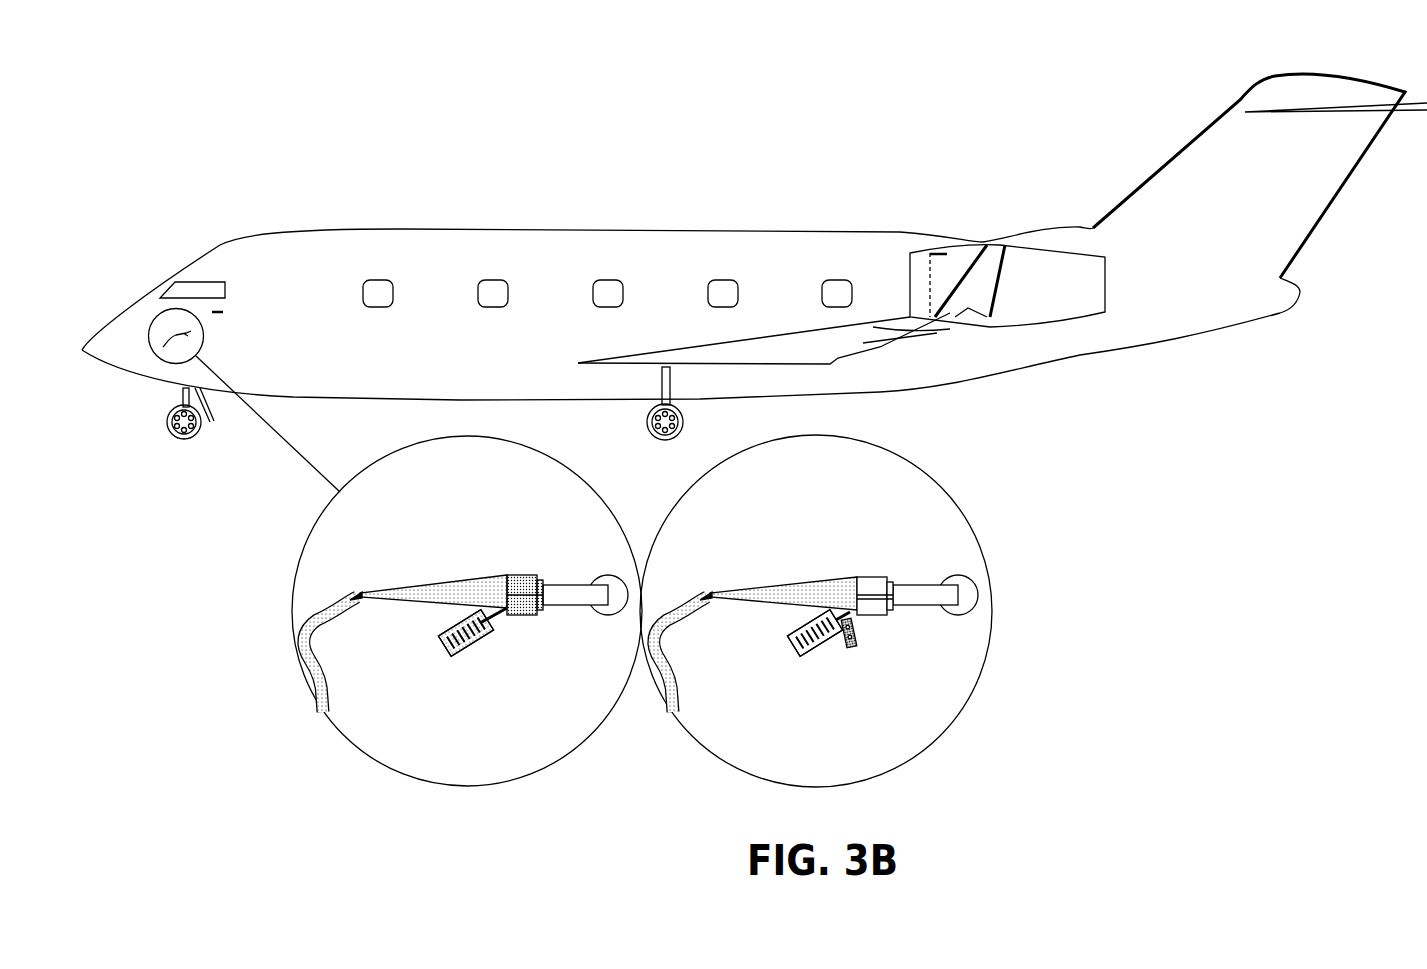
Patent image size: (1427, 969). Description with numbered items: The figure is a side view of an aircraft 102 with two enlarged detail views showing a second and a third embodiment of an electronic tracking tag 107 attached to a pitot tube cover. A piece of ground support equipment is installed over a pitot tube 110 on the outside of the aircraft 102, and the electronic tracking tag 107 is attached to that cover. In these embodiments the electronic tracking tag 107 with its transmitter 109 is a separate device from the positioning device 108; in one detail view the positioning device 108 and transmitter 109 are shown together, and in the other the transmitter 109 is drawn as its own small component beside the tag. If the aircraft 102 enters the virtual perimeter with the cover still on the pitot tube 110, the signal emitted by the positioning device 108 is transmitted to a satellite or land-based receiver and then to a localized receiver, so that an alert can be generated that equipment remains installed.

The aircraft 102 is at (1140, 325).
The electronic tracking tag 107 is at (437, 642).
The positioning device 108 is at (468, 643).
The transmitter 109 is at (858, 632).
The pitot tube 110 is at (590, 587).